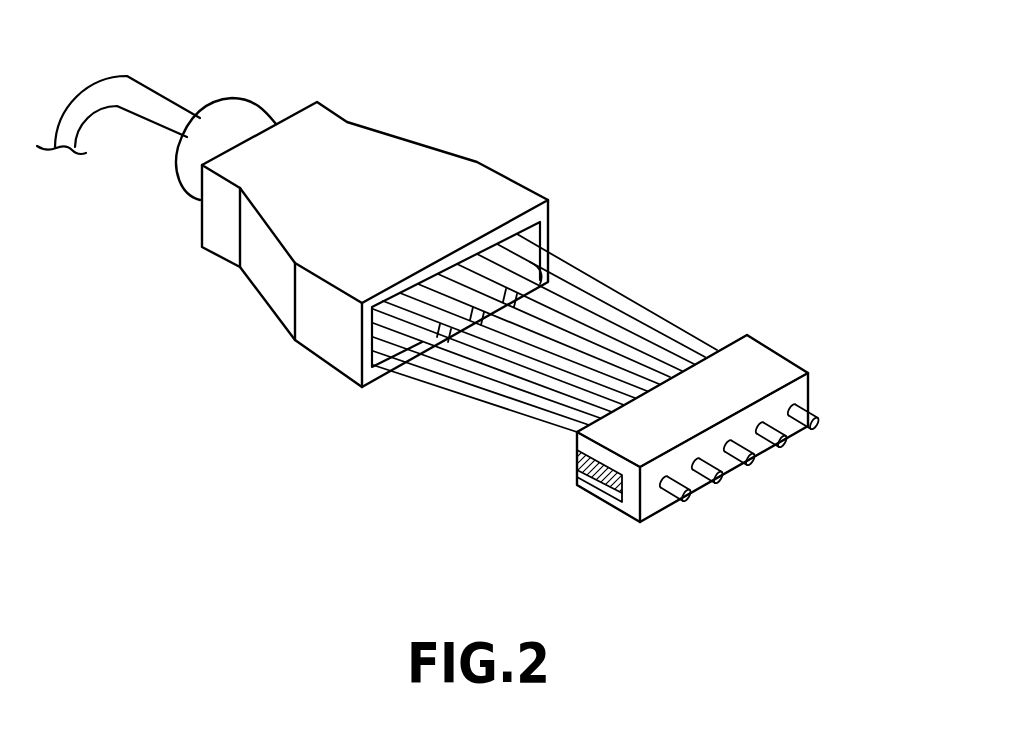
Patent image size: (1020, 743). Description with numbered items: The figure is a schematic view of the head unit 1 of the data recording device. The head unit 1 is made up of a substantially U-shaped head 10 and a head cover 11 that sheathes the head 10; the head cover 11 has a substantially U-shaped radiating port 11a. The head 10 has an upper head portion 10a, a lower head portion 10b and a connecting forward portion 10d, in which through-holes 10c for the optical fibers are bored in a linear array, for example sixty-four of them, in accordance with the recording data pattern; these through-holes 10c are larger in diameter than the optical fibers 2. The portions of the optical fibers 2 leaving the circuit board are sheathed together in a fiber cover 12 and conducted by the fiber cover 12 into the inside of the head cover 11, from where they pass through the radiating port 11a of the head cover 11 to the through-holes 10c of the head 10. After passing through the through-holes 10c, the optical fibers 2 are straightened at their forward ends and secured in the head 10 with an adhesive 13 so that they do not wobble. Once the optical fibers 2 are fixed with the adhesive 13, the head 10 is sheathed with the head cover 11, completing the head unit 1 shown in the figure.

The head unit 1 is at (584, 155).
The optical fibers 2 is at (742, 448).
The head 10 is at (764, 308).
The upper head portion 10a is at (776, 366).
The lower head portion 10b is at (612, 498).
The through-holes 10c is at (727, 448).
The connecting forward portion 10d is at (797, 392).
The head cover 11 is at (370, 149).
The radiating port 11a is at (540, 234).
The fiber cover 12 is at (107, 82).
The adhesive 13 is at (584, 459).